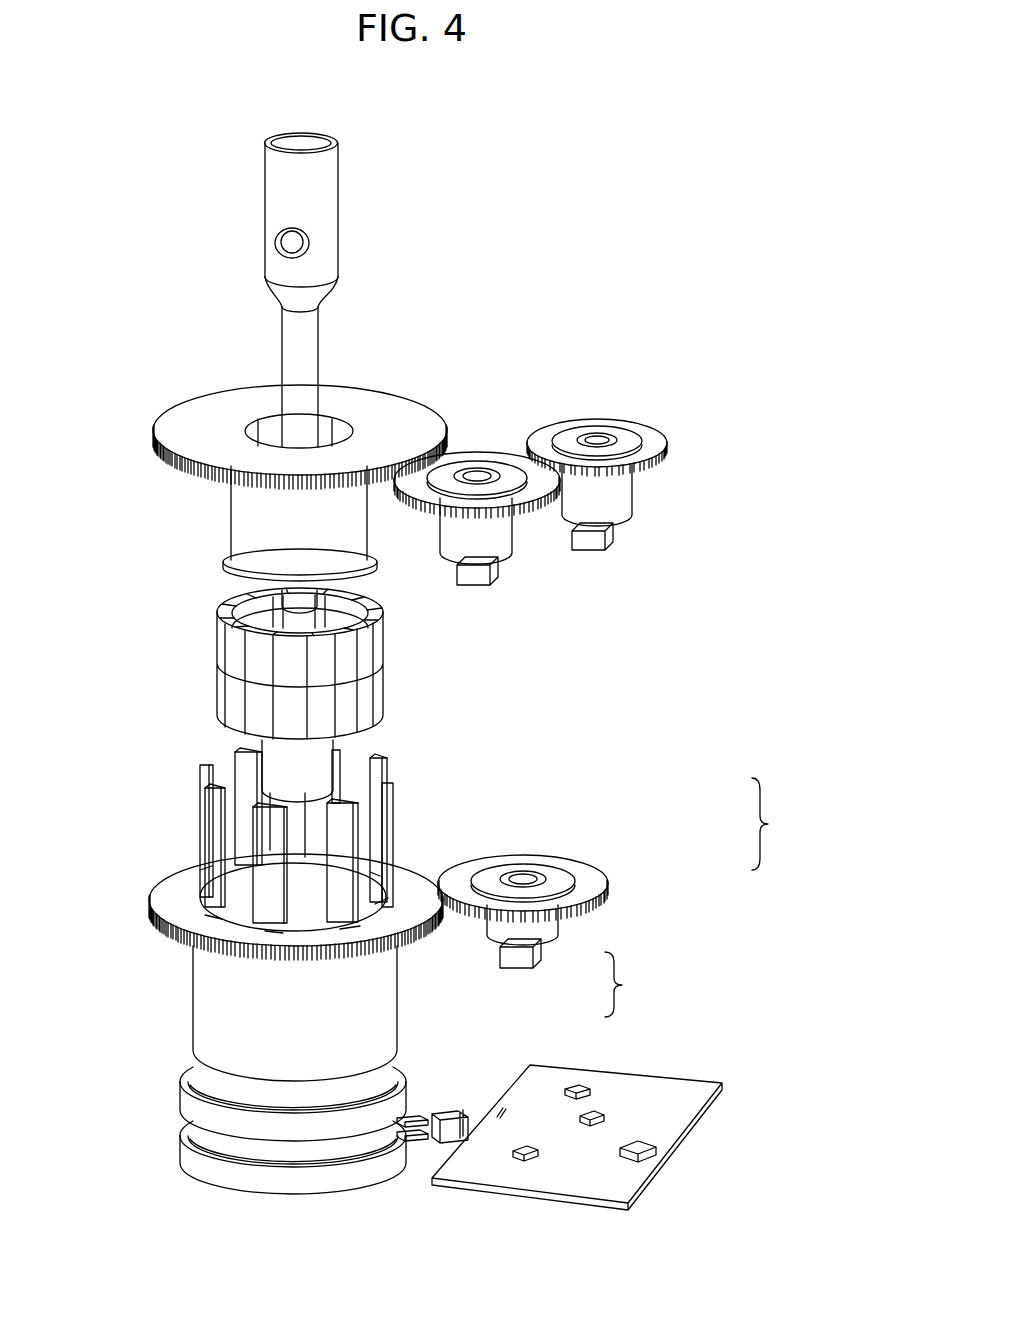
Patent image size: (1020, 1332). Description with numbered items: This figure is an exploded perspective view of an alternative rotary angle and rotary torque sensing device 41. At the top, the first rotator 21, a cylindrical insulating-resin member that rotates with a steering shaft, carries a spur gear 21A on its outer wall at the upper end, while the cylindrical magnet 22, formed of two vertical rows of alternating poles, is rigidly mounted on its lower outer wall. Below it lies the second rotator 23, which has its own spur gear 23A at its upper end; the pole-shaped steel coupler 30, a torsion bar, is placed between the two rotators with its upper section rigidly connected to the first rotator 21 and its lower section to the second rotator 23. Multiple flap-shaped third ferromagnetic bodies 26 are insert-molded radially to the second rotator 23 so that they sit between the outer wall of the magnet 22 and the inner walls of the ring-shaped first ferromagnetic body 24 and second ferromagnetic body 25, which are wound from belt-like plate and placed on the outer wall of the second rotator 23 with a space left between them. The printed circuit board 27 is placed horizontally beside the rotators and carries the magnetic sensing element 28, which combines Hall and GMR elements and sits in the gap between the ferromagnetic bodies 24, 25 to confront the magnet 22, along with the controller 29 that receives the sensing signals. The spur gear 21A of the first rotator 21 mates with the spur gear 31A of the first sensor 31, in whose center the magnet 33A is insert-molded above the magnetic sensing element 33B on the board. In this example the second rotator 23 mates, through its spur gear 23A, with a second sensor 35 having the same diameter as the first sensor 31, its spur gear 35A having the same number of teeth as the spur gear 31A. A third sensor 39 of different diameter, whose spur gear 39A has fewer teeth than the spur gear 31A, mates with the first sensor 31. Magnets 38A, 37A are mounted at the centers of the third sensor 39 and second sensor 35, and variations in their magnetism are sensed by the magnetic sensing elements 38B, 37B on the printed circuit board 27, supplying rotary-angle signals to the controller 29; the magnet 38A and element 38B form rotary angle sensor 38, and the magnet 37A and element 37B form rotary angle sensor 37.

The first rotator 21 is at (207, 405).
The spur gear 21A is at (157, 452).
The magnet 22 is at (223, 643).
The second rotator 23 is at (172, 890).
The spur gear 23A is at (160, 913).
The first ferromagnetic body 24 is at (188, 1096).
The second ferromagnetic body 25 is at (188, 1158).
The third ferromagnetic body 26 is at (213, 818).
The printed circuit board 27 is at (685, 1093).
The magnetic sensing element 28 is at (433, 1136).
The controller 29 is at (648, 1156).
The coupler 30 is at (300, 343).
The first sensor 31 is at (478, 467).
The spur gear 31A is at (527, 521).
The magnet 33A is at (472, 574).
The magnetic sensing element 33B is at (525, 1163).
The second sensor 35 is at (585, 880).
The spur gear 35A is at (607, 902).
The rotary angle sensor 37 is at (632, 984).
The magnet 37A is at (517, 957).
The magnetic sensing element 37B is at (575, 1088).
The rotary angle sensor 38 is at (780, 824).
The magnet 38A is at (603, 543).
The magnetic sensing element 38B is at (592, 1114).
The third sensor 39 is at (627, 440).
The spur gear 39A is at (667, 442).
The rotary angle and rotary torque sensing device 41 is at (768, 1285).